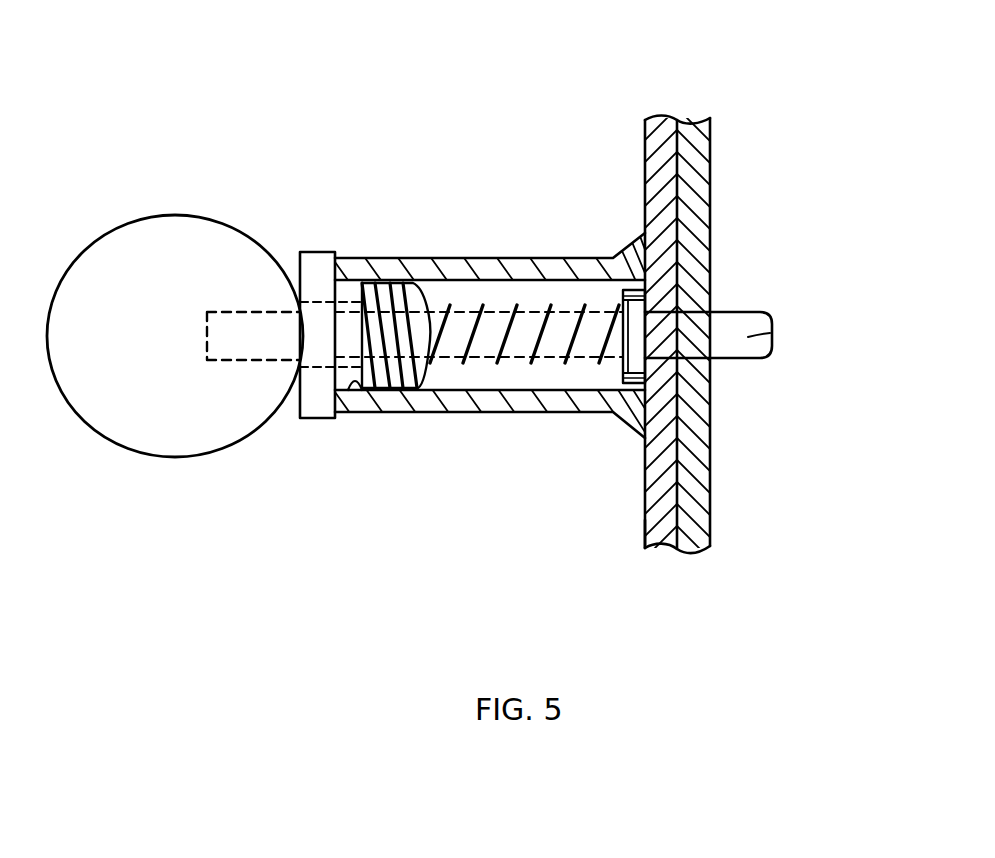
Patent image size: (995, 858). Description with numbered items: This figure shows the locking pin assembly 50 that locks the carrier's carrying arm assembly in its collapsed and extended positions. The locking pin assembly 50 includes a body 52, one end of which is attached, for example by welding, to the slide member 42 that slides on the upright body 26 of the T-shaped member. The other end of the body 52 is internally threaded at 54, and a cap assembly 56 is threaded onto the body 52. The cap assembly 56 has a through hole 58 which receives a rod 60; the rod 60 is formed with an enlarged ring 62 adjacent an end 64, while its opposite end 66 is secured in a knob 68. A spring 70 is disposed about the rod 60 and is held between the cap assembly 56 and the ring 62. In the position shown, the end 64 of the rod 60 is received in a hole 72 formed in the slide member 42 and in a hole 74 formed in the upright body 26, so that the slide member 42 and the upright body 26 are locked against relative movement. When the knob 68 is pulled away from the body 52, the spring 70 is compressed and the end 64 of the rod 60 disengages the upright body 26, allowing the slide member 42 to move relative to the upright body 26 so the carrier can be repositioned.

The locking pin assembly 50 is at (552, 114).
The upright body 26 is at (710, 448).
The slide member 42 is at (648, 524).
The body 52 is at (452, 258).
The internal threads 54 is at (365, 390).
The cap assembly 56 is at (317, 252).
The through hole 58 is at (308, 370).
The rod 60 is at (482, 362).
The enlarged ring 62 is at (650, 298).
The end of rod 64 is at (772, 338).
The end of rod 66 is at (205, 333).
The knob 68 is at (124, 445).
The spring 70 is at (537, 347).
The hole 72 is at (642, 298).
The hole 74 is at (708, 361).